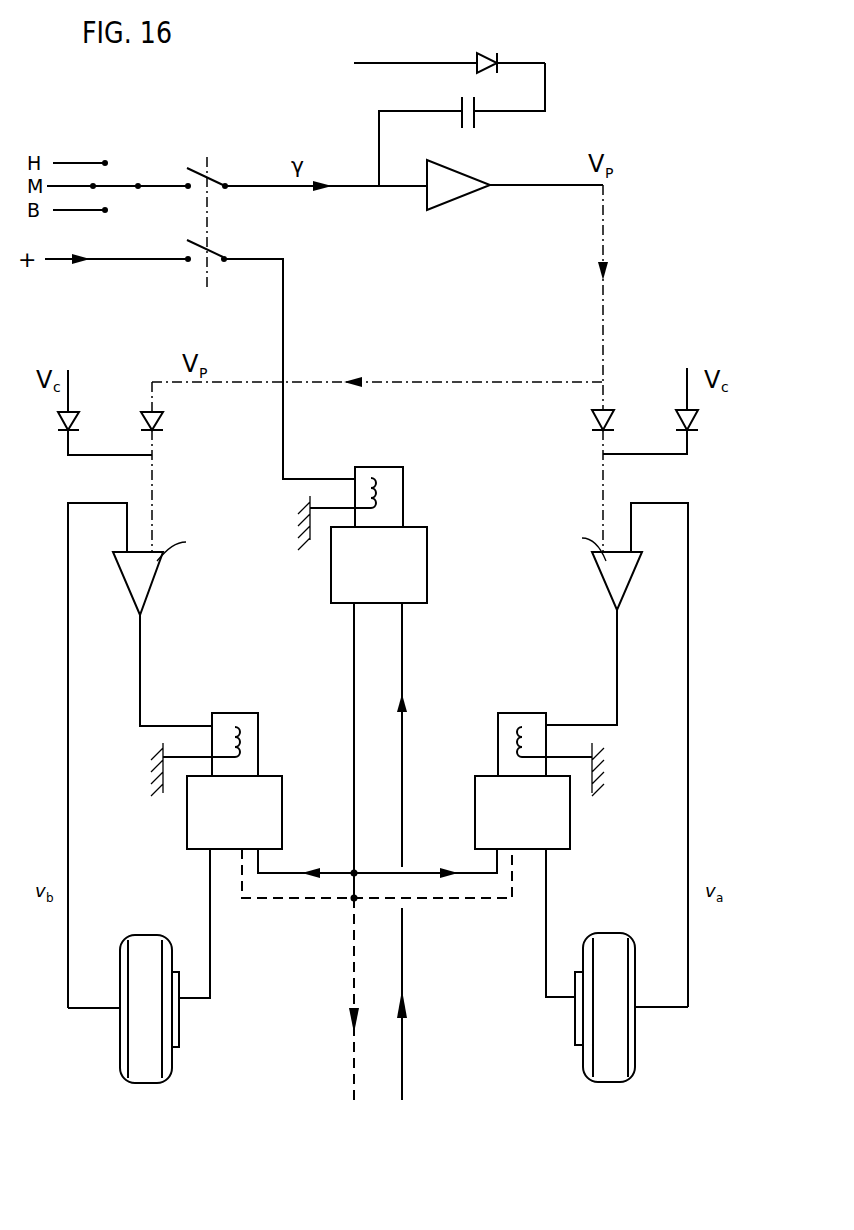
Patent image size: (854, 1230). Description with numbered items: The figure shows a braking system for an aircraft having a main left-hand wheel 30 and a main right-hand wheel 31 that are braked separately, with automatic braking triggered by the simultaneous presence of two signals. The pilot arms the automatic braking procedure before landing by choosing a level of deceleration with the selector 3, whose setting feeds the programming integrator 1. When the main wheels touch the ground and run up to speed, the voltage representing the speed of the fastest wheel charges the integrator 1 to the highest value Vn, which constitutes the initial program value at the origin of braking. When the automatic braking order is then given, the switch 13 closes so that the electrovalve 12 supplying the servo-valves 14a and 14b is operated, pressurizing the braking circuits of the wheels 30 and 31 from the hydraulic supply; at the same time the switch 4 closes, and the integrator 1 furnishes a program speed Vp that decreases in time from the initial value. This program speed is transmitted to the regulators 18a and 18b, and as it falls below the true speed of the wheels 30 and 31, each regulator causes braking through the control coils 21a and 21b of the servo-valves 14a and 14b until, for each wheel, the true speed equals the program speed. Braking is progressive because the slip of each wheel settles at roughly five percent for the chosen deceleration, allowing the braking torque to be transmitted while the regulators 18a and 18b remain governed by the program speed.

The selector 3 is at (118, 186).
The switch 4 is at (216, 178).
The switch 13 is at (212, 250).
The programming integrator 1 is at (452, 189).
The electrovalve 12 is at (368, 578).
The regulator 18a is at (618, 586).
The regulator 18b is at (141, 585).
The control coil 21a is at (522, 725).
The control coil 21b is at (236, 725).
The servo-valve 14a is at (558, 822).
The servo-valve 14b is at (200, 822).
The main left-hand wheel 30 is at (146, 1074).
The main right-hand wheel 31 is at (612, 1070).